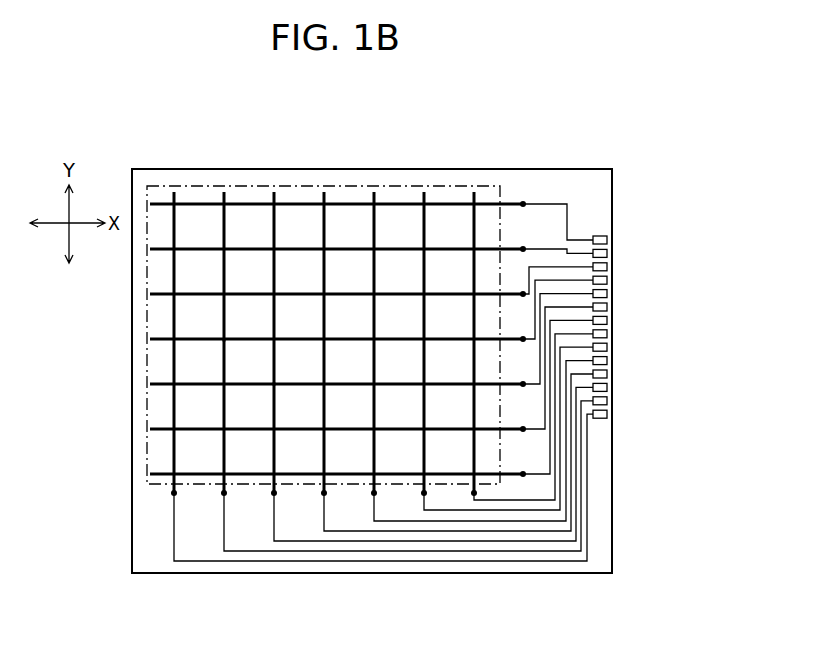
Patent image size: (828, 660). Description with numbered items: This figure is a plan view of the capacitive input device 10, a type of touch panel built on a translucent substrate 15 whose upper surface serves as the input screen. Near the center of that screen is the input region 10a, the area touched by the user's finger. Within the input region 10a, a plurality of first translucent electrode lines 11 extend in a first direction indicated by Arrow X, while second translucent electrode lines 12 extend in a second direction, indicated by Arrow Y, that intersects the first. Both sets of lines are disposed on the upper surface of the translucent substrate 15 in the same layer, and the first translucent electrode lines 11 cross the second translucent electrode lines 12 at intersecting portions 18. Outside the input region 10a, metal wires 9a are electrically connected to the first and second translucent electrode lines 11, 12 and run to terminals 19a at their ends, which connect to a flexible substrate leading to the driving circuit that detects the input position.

The capacitive input device 10 is at (496, 143).
The input region 10a is at (160, 484).
The first translucent electrode lines 11 is at (165, 294).
The second translucent electrode lines 12 is at (375, 227).
The translucent substrate 15 is at (470, 168).
The intersecting portions 18 is at (273, 383).
The terminals 19a is at (633, 233).
The metal wires 9a is at (533, 492).